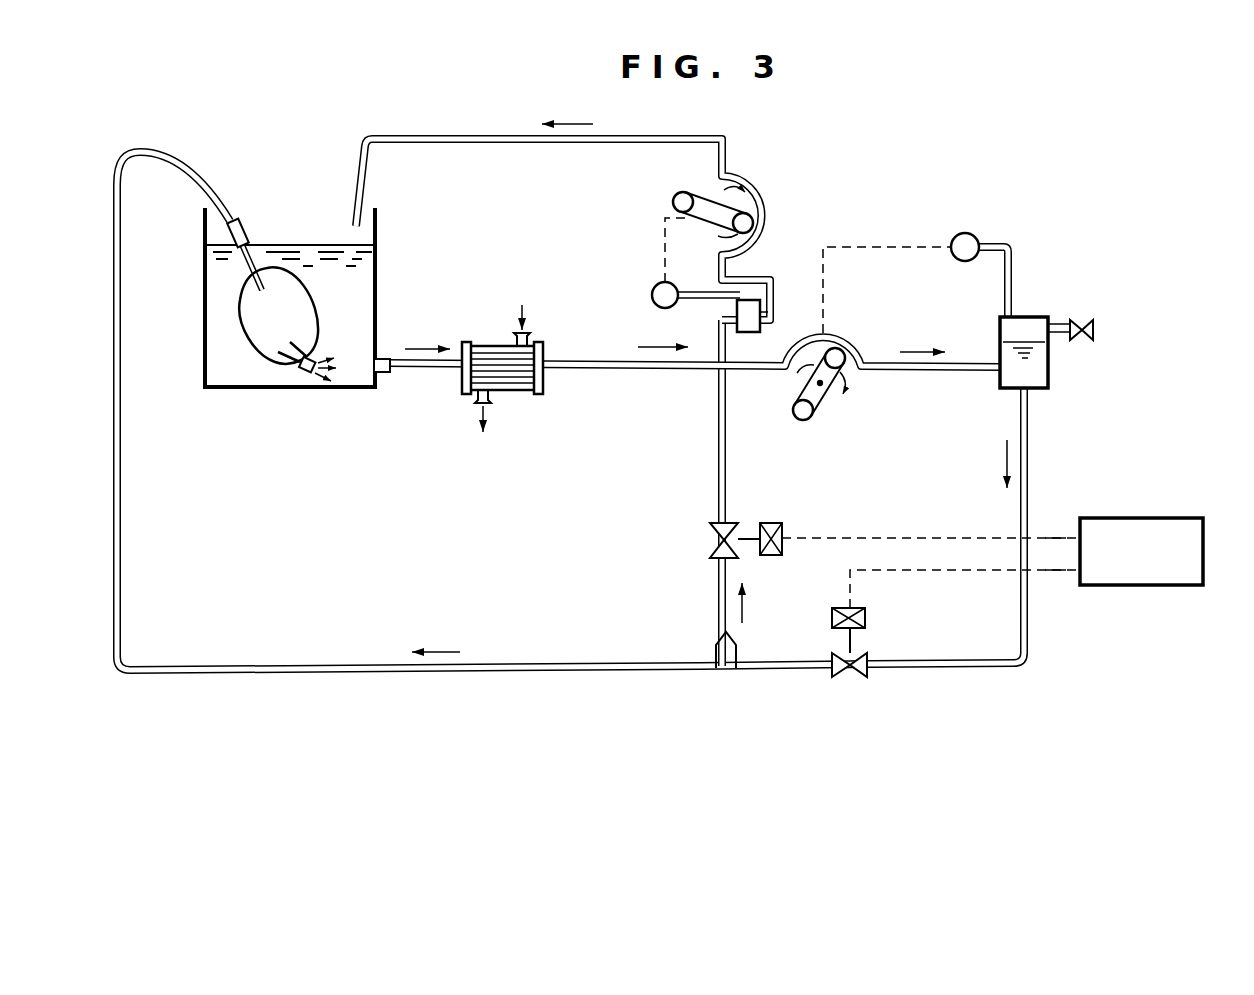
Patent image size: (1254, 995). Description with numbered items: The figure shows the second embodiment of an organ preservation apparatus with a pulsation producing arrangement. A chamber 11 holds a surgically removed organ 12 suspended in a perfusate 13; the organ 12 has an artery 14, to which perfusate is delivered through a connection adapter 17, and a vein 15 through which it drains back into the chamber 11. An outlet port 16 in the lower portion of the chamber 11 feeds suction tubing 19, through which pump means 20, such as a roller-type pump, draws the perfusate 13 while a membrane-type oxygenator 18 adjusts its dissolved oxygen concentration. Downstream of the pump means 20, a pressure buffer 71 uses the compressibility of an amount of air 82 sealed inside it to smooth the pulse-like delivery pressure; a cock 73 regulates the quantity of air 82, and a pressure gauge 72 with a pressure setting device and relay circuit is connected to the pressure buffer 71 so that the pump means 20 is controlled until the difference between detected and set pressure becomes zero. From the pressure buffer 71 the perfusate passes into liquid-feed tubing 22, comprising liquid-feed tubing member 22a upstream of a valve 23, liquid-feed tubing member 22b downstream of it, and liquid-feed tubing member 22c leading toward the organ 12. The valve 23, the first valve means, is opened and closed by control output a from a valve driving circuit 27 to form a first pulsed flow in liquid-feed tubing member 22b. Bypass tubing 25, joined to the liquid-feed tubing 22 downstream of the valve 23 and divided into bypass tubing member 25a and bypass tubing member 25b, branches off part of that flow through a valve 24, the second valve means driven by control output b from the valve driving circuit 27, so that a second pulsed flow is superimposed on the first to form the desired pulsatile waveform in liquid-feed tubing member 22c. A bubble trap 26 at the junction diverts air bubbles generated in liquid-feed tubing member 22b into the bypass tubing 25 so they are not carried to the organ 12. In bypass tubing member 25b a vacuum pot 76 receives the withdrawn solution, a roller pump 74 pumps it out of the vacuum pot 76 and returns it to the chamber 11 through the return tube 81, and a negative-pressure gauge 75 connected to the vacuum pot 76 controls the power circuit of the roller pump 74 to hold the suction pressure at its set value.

The chamber 11 is at (377, 322).
The organ 12 is at (252, 317).
The perfusate 13 is at (367, 290).
The artery 14 is at (242, 276).
The vein 15 is at (297, 370).
The outlet port 16 is at (384, 362).
The connection adapter 17 is at (243, 226).
The membrane-type oxygenator 18 is at (520, 395).
The suction tubing 19 is at (428, 370).
The pump means 20 is at (838, 398).
The liquid-feed tubing 22 is at (573, 523).
The liquid-feed tubing member 22a is at (1030, 670).
The liquid-feed tubing member 22b is at (787, 670).
The liquid-feed tubing member 22c is at (441, 496).
The valve 23 is at (852, 678).
The valve 24 is at (737, 522).
The bypass tubing 25 is at (631, 493).
The bypass tubing member 25a is at (715, 594).
The bypass tubing member 25b is at (720, 482).
The bubble trap 26 is at (722, 671).
The valve driving circuit 27 is at (1138, 586).
The pressure buffer 71 is at (1042, 316).
The pressure gauge 72 is at (965, 233).
The cock 73 is at (1094, 321).
The roller pump 74 is at (760, 192).
The negative-pressure gauge 75 is at (652, 291).
The vacuum pot 76 is at (757, 300).
The return tube 81 is at (368, 218).
The air 82 is at (1033, 333).